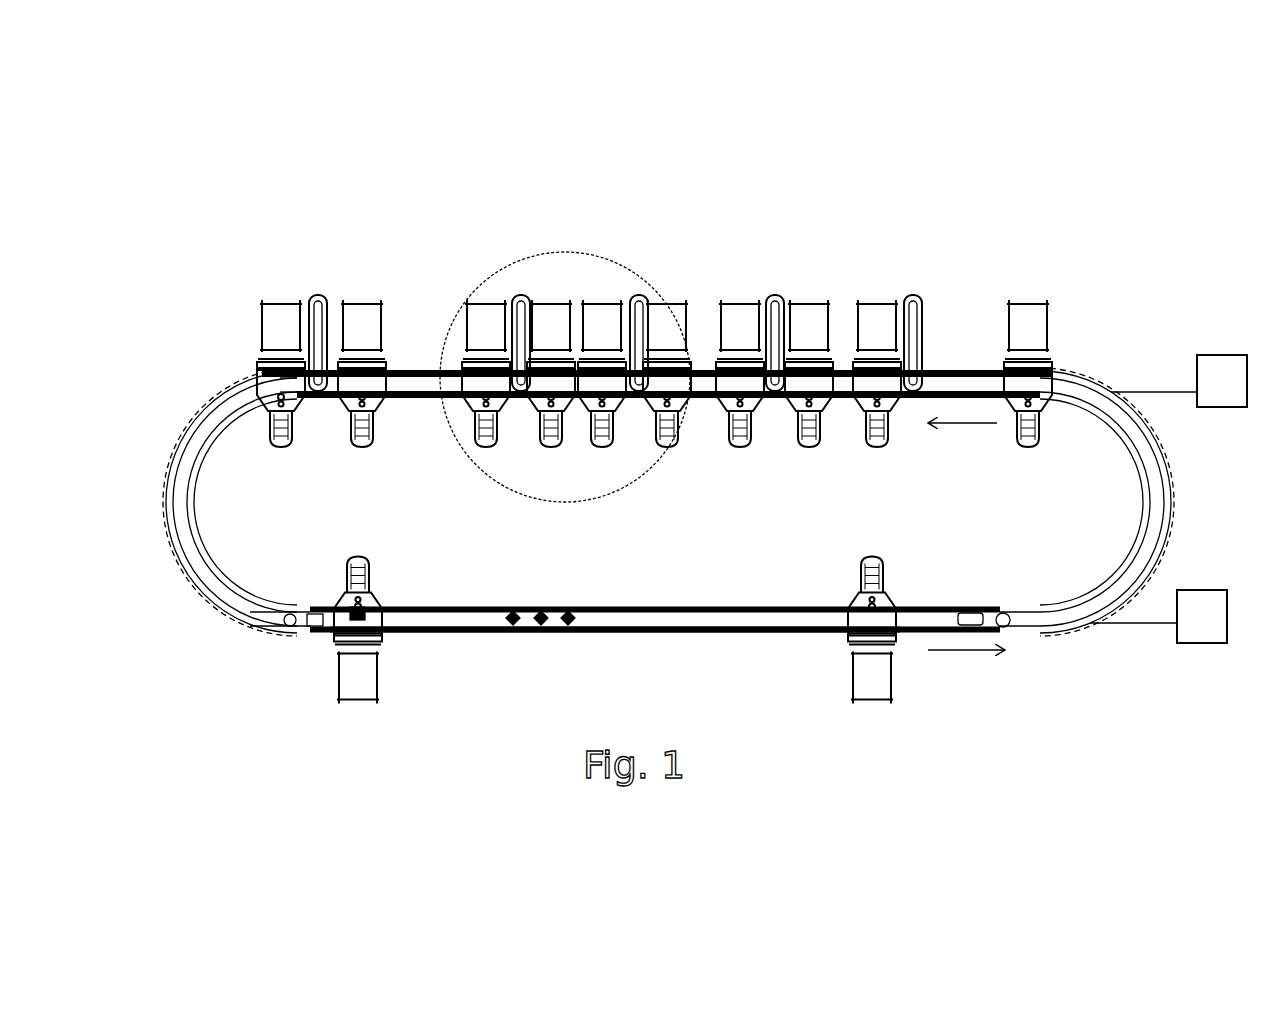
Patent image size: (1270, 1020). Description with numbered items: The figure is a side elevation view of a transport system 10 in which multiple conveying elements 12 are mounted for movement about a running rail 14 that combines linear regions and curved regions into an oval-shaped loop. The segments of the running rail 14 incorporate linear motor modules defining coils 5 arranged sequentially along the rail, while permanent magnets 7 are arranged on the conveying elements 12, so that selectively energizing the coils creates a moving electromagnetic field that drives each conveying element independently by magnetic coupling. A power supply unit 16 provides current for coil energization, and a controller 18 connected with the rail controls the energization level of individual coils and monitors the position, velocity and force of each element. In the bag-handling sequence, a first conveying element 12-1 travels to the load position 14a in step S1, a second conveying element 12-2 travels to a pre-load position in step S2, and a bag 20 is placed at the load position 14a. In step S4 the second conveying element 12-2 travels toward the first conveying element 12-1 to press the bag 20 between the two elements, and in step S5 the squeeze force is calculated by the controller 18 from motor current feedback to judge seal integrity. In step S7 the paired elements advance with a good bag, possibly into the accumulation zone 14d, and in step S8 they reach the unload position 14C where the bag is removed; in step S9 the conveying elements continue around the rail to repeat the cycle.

The transport system 10 is at (228, 170).
The conveying element 12 is at (261, 393).
The first conveying element 12-1 is at (856, 300).
The second conveying element 12-2 is at (1052, 337).
The running rail 14 is at (1097, 382).
The load position 14a is at (900, 422).
The unload position 14C is at (314, 412).
The accumulation zone 14d is at (650, 481).
The power supply unit 16 is at (1200, 612).
The controller 18 is at (1215, 362).
The bag 20 is at (921, 300).
The coil 5 is at (513, 611).
The permanent magnet 7 is at (366, 614).
The step S1 is at (884, 247).
The step S2 is at (1032, 268).
The step S4 is at (768, 258).
The step S5 is at (800, 271).
The step S7 is at (578, 250).
The step S8 is at (335, 270).
The step S9 is at (443, 663).